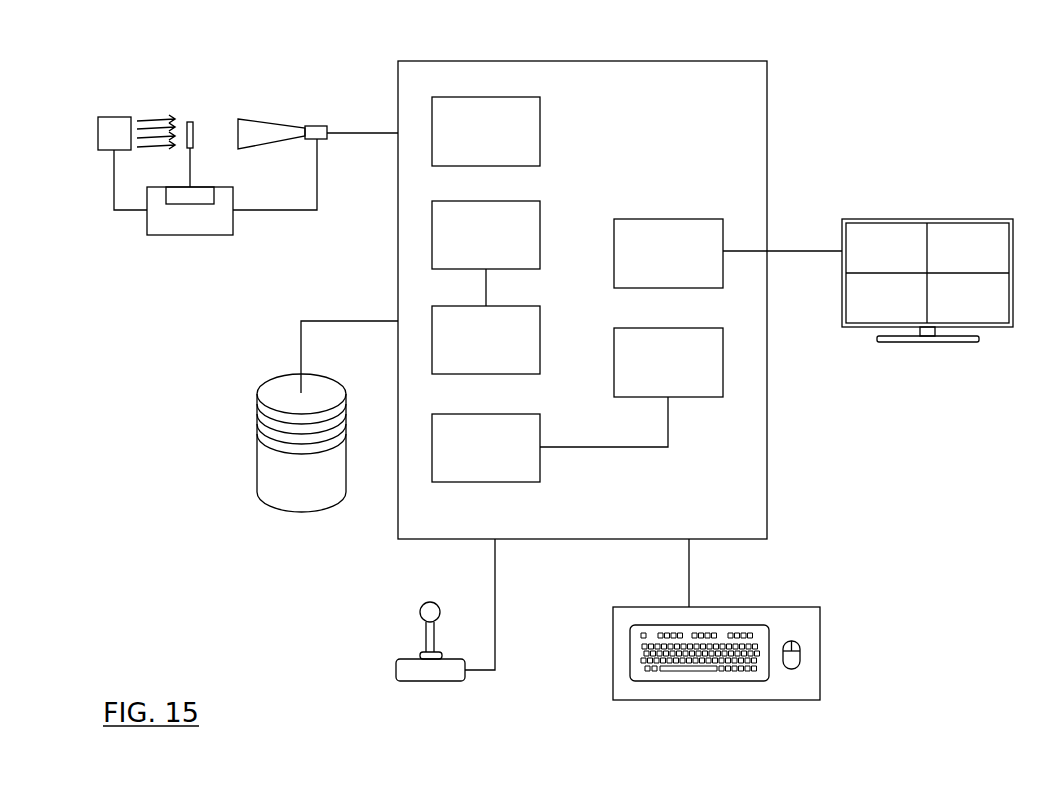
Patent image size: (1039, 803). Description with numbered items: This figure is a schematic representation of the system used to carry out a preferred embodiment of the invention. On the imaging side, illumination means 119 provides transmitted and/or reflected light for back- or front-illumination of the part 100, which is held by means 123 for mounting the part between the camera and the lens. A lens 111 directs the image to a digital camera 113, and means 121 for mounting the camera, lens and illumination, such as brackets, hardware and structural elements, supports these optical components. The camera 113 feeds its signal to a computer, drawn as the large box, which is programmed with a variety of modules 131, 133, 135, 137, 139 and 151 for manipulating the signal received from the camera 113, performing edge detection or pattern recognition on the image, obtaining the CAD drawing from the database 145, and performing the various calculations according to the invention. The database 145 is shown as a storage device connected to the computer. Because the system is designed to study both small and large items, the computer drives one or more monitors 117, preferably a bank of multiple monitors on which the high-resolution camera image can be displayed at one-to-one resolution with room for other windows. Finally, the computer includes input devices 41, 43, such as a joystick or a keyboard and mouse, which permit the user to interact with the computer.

The illumination means 119 is at (97, 134).
The part 100 is at (189, 118).
The lens 111 is at (268, 122).
The digital camera 113 is at (318, 126).
The means for mounting the camera, lens and illumination 121 is at (172, 236).
The means for mounting the part 123 is at (207, 205).
The module 131 is at (466, 145).
The module 133 is at (466, 245).
The module 135 is at (466, 355).
The module 137 is at (466, 462).
The module 139 is at (648, 267).
The module 151 is at (649, 375).
The database 145 is at (300, 509).
The monitor 117 is at (864, 328).
The input device 41 is at (396, 666).
The input device 43 is at (820, 652).